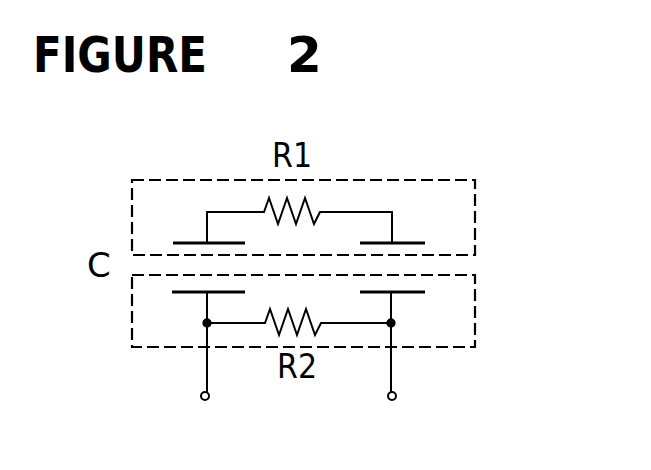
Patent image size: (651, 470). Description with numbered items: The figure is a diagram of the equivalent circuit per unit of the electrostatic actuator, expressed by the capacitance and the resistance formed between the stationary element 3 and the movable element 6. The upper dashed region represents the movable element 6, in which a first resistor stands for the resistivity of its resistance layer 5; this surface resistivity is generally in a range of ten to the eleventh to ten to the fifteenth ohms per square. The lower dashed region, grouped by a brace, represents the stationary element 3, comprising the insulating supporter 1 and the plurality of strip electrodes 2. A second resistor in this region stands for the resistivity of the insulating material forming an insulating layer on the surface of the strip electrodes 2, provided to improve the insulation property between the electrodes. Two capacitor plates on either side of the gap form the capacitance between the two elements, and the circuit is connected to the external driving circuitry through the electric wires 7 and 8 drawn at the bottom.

The insulating supporter 1 is at (366, 342).
The strip electrodes 2 is at (420, 290).
The stationary element 3 is at (364, 321).
The resistance layer 5 is at (315, 208).
The movable element 6 is at (457, 217).
The electric wire 7 is at (204, 400).
The electric wire 8 is at (392, 400).